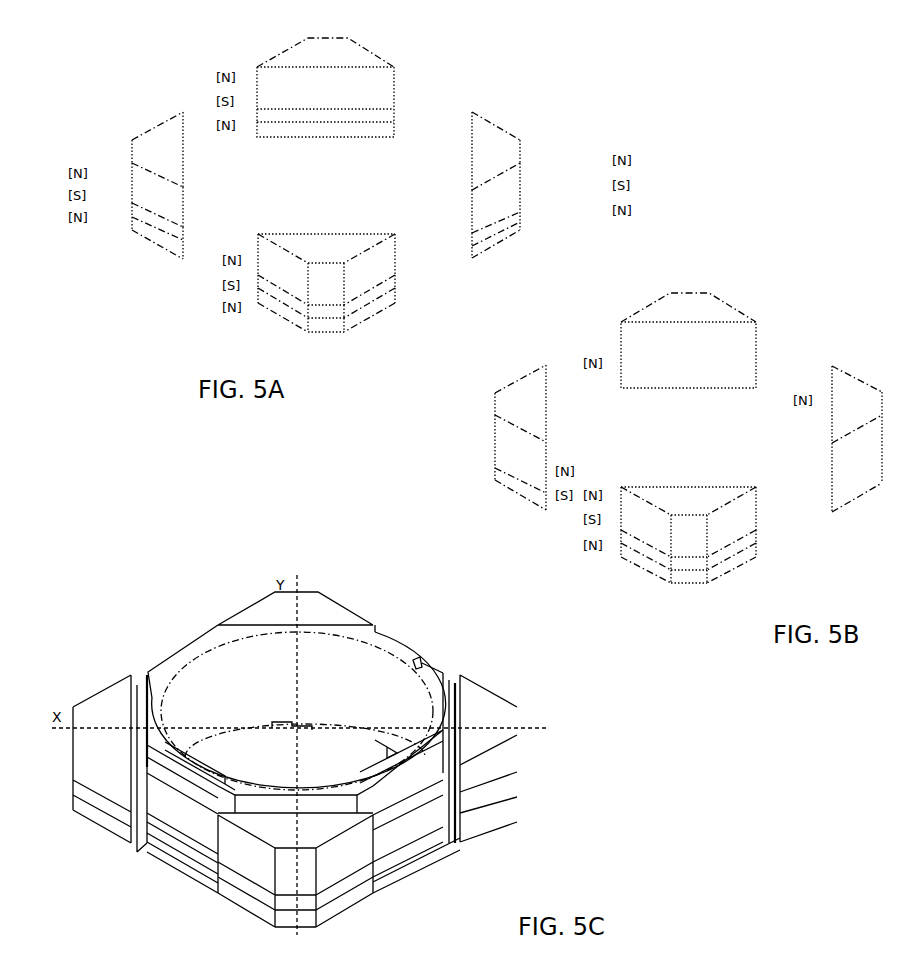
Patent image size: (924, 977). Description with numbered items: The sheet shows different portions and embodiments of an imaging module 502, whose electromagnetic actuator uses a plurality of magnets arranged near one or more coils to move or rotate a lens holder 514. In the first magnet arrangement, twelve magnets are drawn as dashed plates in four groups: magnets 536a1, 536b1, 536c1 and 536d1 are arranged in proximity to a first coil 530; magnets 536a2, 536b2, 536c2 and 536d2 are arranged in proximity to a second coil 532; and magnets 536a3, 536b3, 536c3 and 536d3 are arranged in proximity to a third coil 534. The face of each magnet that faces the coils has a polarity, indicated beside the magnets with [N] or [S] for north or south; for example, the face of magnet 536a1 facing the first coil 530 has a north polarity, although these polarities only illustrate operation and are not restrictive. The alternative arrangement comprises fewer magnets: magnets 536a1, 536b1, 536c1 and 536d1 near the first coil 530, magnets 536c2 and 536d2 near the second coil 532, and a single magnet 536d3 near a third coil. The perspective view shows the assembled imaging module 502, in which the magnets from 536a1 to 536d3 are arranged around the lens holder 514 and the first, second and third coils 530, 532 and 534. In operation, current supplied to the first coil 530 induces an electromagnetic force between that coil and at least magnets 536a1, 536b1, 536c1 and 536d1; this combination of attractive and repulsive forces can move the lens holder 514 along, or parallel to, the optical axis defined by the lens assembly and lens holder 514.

In FIG. 5C, the imaging module 502 is at (430, 630).
In FIG. 5C, the lens holder 514 is at (228, 635).
In FIG. 5C, the first coil 530 is at (175, 813).
In FIG. 5C, the second coil 532 is at (185, 850).
In FIG. 5C, the third coil 534 is at (202, 873).
In FIG. 5A, the magnet 536a1 is at (375, 58).
In FIG. 5B, the magnet 536a1 is at (672, 364).
In FIG. 5C, the magnet 536a1 is at (277, 621).
In FIG. 5A, the magnet 536a2 is at (363, 115).
In FIG. 5A, the magnet 536a3 is at (383, 130).
In FIG. 5A, the magnet 536b1 is at (510, 153).
In FIG. 5B, the magnet 536b1 is at (867, 390).
In FIG. 5C, the magnet 536b1 is at (467, 705).
In FIG. 5A, the magnet 536b2 is at (510, 210).
In FIG. 5C, the magnet 536b2 is at (513, 785).
In FIG. 5A, the magnet 536b3 is at (518, 225).
In FIG. 5C, the magnet 536b3 is at (512, 807).
In FIG. 5A, the magnet 536c1 is at (175, 175).
In FIG. 5B, the magnet 536c1 is at (518, 393).
In FIG. 5C, the magnet 536c1 is at (150, 788).
In FIG. 5A, the magnet 536c2 is at (170, 228).
In FIG. 5B, the magnet 536c2 is at (508, 480).
In FIG. 5C, the magnet 536c2 is at (102, 807).
In FIG. 5A, the magnet 536c3 is at (165, 246).
In FIG. 5C, the magnet 536c3 is at (117, 830).
In FIG. 5A, the magnet 536d1 is at (372, 237).
In FIG. 5B, the magnet 536d1 is at (723, 490).
In FIG. 5C, the magnet 536d1 is at (274, 842).
In FIG. 5A, the magnet 536d2 is at (370, 290).
In FIG. 5B, the magnet 536d2 is at (725, 548).
In FIG. 5C, the magnet 536d2 is at (352, 922).
In FIG. 5A, the magnet 536d3 is at (378, 307).
In FIG. 5B, the magnet 536d3 is at (735, 562).
In FIG. 5C, the magnet 536d3 is at (355, 953).